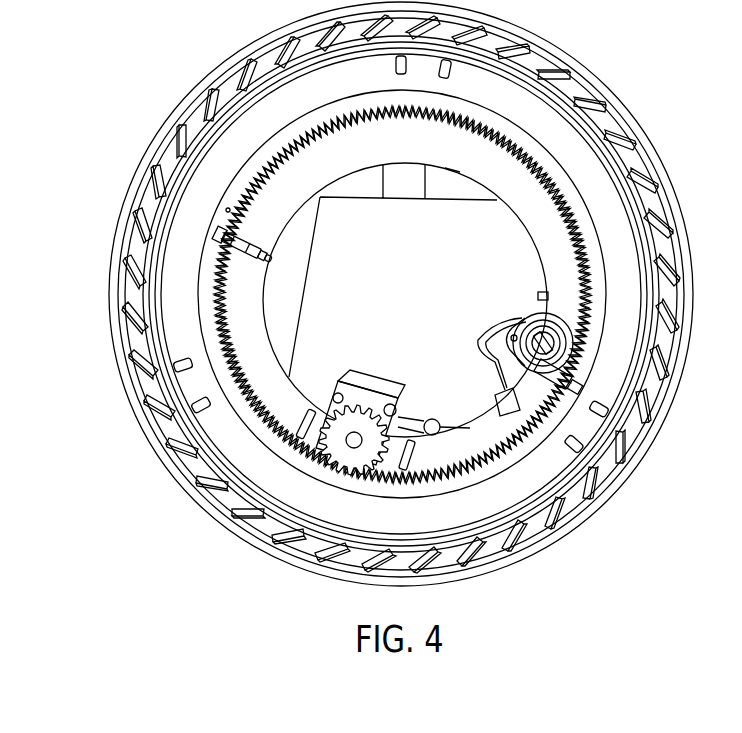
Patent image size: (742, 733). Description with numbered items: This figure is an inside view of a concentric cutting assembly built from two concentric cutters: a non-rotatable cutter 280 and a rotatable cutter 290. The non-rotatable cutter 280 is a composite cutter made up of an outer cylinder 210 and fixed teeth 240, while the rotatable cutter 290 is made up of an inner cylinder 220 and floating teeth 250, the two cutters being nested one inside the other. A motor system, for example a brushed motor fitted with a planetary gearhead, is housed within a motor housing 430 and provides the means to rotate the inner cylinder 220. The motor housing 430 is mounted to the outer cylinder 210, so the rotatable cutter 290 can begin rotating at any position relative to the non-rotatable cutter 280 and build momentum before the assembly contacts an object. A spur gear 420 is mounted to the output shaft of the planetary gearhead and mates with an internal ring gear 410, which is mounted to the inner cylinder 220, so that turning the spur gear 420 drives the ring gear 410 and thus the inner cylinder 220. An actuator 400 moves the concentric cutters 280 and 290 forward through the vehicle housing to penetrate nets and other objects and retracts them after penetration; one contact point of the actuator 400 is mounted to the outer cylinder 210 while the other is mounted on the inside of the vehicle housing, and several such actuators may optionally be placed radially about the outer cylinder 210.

The outer cylinder 210 is at (154, 231).
The inner cylinder 220 is at (548, 107).
The fixed teeth 240 is at (133, 273).
The floating teeth 250 is at (628, 420).
The non-rotatable cutter 280 is at (155, 182).
The rotatable cutter 290 is at (590, 163).
The actuator 400 is at (563, 327).
The internal ring gear 410 is at (245, 420).
The spur gear 420 is at (328, 452).
The motor housing 430 is at (340, 396).